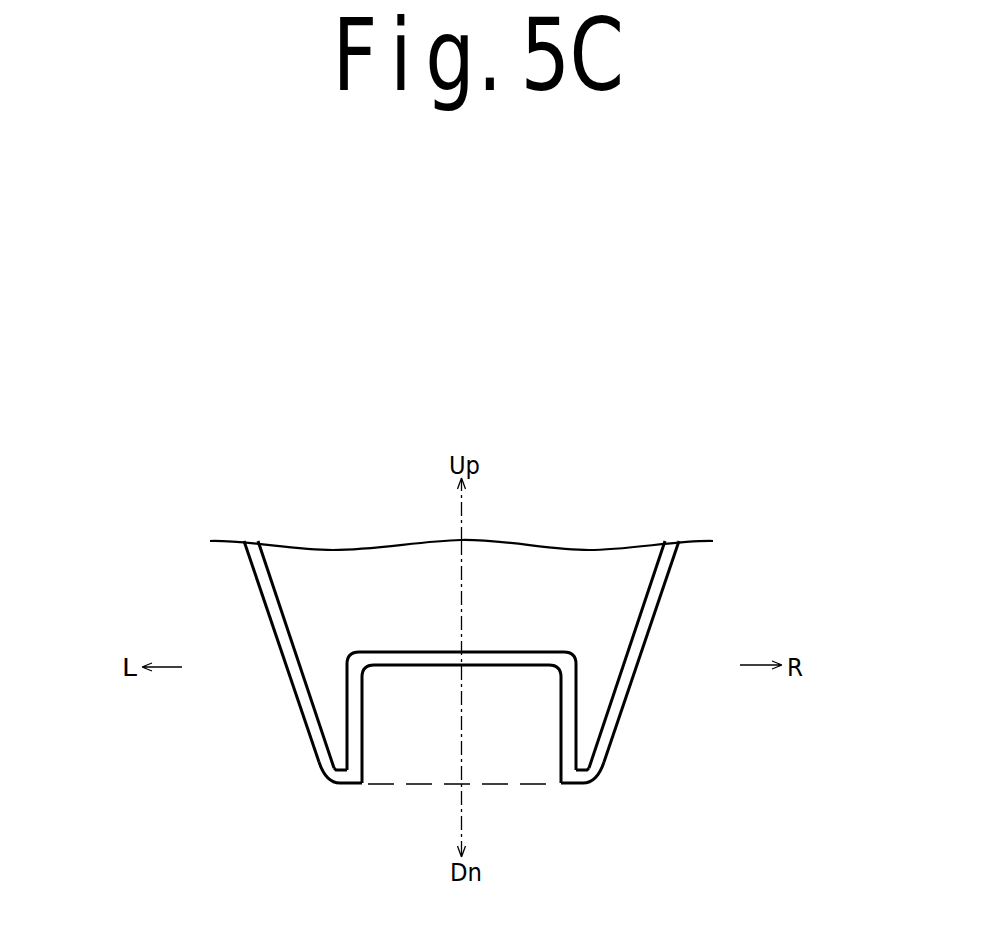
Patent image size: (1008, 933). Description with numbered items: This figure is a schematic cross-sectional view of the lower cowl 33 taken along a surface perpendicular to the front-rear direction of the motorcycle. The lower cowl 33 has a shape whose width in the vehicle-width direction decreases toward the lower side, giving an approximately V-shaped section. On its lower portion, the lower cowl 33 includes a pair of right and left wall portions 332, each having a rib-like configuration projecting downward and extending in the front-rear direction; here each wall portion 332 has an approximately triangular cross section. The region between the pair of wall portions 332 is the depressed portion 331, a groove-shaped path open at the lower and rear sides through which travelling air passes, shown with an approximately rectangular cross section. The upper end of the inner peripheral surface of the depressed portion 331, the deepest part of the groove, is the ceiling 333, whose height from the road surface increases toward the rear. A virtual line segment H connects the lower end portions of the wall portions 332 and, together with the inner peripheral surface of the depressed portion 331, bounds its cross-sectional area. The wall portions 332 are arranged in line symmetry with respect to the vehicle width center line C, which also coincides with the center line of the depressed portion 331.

The lower cowl 33 is at (473, 708).
The depressed portion 331 is at (443, 746).
The wall portions 332 is at (335, 786).
The ceiling 333 is at (480, 667).
The vehicle width center line C is at (463, 617).
The virtual line segment H is at (398, 786).